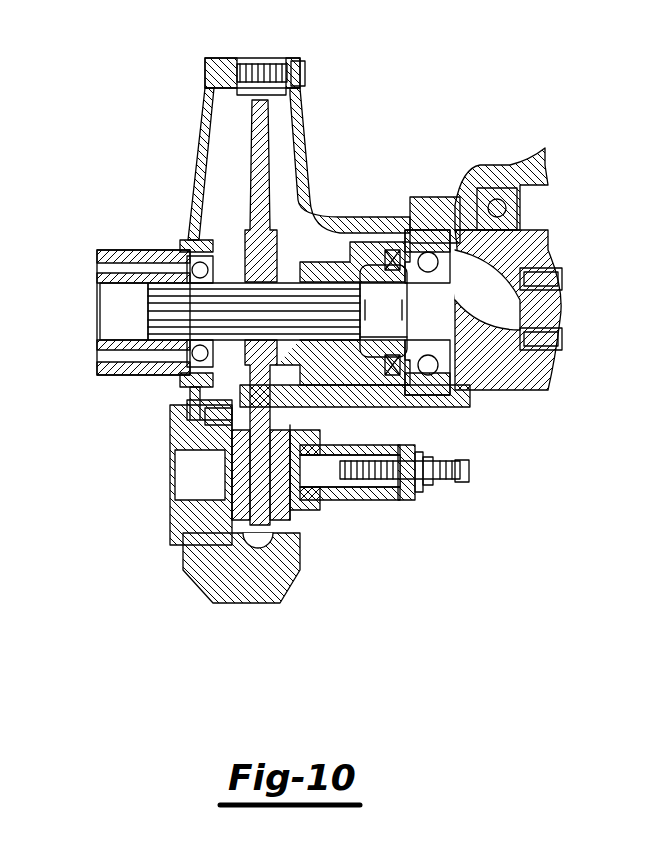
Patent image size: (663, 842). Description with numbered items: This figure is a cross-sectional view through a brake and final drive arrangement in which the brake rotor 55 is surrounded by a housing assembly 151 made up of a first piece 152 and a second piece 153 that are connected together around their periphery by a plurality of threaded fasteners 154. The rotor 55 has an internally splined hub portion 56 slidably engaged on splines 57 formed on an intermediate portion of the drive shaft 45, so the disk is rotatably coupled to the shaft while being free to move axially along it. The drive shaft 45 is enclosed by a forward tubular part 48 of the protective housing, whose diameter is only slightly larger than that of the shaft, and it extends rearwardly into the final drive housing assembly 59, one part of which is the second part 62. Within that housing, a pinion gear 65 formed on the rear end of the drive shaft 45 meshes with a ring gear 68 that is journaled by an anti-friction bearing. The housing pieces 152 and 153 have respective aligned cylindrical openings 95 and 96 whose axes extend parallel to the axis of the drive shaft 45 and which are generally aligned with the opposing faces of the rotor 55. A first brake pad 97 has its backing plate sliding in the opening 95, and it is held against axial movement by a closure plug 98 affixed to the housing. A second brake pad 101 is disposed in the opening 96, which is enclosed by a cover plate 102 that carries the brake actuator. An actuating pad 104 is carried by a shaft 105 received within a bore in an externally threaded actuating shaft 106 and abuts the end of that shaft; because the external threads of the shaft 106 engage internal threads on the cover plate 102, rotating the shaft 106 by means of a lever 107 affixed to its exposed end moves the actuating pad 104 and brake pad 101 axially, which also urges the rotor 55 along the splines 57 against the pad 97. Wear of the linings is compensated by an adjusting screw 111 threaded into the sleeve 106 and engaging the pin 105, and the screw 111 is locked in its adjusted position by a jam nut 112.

The housing assembly 151 is at (228, 57).
The threaded fasteners 154 is at (306, 72).
The first piece 152 is at (193, 162).
The second piece 153 is at (311, 166).
The brake rotor 55 is at (257, 200).
The internally splined hub portion 56 is at (302, 270).
The forward tubular part 48 is at (147, 255).
The drive shaft 45 is at (100, 283).
The splines 57 is at (145, 316).
The final drive housing assembly 59 is at (447, 402).
The second part 62 is at (503, 172).
The ring gear 68 is at (540, 236).
The pinion gear 65 is at (495, 350).
The cylindrical opening 95 is at (197, 433).
The closure plug 98 is at (175, 470).
The first brake pad 97 is at (230, 493).
The cylindrical opening 96 is at (300, 546).
The brake pad 101 is at (268, 522).
The actuating pad 104 is at (320, 436).
The cover plate 102 is at (375, 445).
The shaft 105 is at (325, 502).
The actuating shaft 106 is at (380, 502).
The lever 107 is at (410, 502).
The jam nut 112 is at (440, 492).
The adjusting screw 111 is at (468, 480).